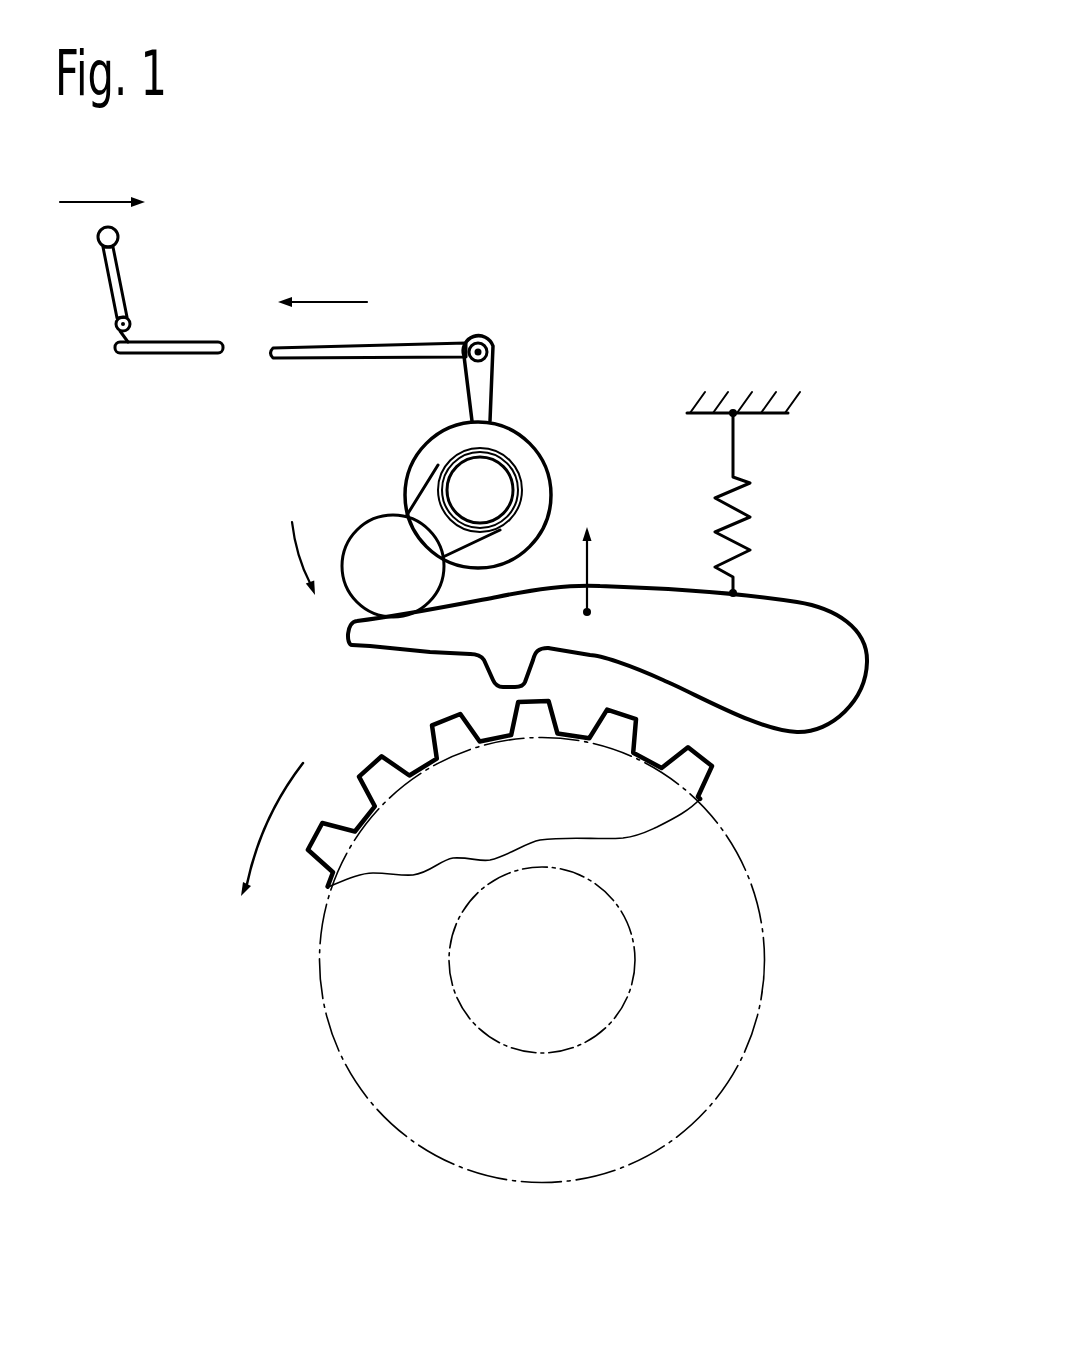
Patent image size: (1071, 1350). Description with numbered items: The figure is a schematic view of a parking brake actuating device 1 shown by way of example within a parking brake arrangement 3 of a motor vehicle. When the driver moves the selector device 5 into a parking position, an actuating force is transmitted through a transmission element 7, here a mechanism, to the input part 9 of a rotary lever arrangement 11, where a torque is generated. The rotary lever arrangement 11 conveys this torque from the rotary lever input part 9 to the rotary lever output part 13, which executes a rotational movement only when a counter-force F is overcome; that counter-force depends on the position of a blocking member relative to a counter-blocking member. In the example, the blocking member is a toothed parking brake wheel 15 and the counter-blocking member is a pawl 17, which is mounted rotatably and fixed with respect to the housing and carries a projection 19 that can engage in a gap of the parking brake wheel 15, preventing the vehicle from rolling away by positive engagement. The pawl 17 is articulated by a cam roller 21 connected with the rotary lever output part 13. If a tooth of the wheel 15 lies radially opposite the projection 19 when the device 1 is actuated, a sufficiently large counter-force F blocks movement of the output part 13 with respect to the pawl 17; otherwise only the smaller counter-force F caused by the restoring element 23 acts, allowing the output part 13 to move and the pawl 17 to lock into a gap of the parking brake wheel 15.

The parking brake actuating device 1 is at (550, 322).
The parking brake arrangement 3 is at (722, 75).
The selector device 5 is at (120, 232).
The transmission element 7 is at (405, 343).
The rotary lever input part 9 is at (467, 377).
The rotary lever arrangement 11 is at (556, 450).
The rotary lever output part 13 is at (427, 507).
The parking brake wheel 15 is at (343, 962).
The pawl 17 is at (365, 638).
The projection 19 is at (497, 672).
The cam roller 21 is at (360, 573).
The restoring element 23 is at (764, 527).